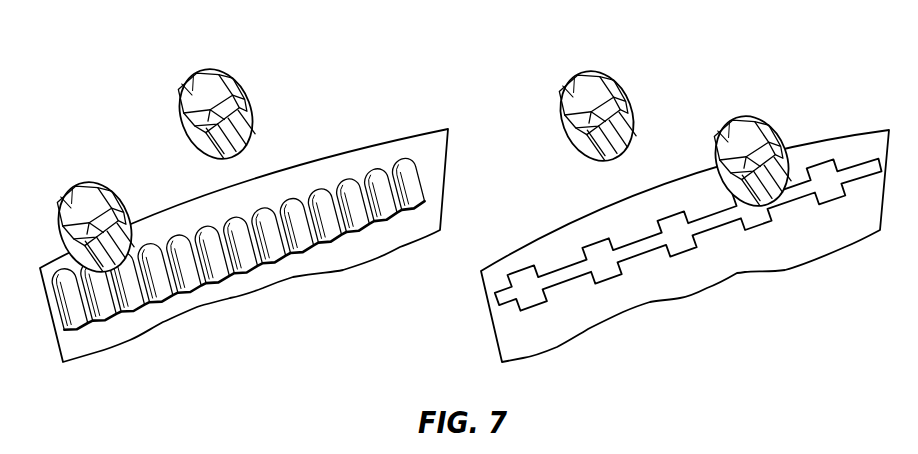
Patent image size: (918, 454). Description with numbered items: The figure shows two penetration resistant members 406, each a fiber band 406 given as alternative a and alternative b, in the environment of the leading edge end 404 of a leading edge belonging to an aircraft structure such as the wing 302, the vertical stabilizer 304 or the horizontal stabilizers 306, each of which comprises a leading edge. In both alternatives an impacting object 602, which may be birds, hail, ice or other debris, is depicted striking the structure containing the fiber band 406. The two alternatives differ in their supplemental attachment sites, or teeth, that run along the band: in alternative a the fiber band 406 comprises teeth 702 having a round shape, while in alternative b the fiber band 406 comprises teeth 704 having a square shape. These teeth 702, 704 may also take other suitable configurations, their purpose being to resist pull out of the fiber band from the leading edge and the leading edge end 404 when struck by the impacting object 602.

The impacting object 602 is at (72, 182).
The leading edge end 404 is at (464, 220).
The wings 302 is at (464, 245).
The vertical stabilizer 304 is at (464, 245).
The horizontal stabilizers 306 is at (370, 243).
The penetration resistant member 406 is at (466, 275).
The teeth 702 is at (208, 230).
The teeth 704 is at (542, 292).